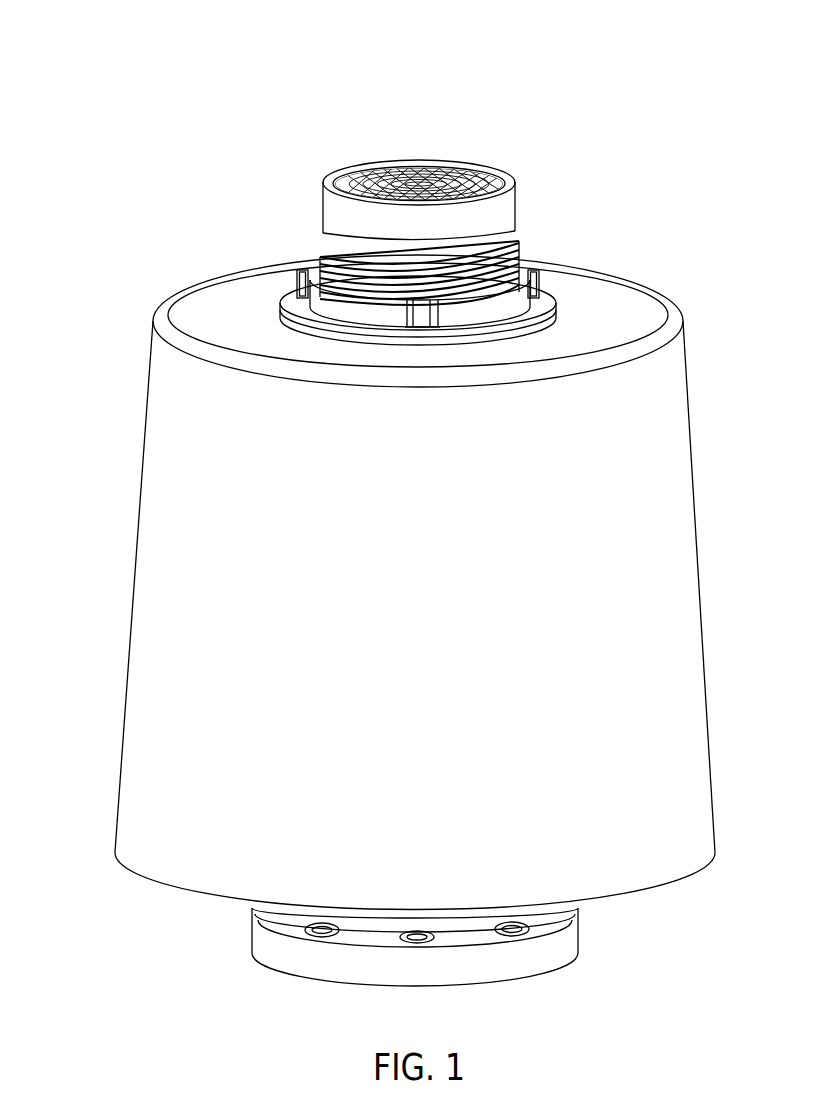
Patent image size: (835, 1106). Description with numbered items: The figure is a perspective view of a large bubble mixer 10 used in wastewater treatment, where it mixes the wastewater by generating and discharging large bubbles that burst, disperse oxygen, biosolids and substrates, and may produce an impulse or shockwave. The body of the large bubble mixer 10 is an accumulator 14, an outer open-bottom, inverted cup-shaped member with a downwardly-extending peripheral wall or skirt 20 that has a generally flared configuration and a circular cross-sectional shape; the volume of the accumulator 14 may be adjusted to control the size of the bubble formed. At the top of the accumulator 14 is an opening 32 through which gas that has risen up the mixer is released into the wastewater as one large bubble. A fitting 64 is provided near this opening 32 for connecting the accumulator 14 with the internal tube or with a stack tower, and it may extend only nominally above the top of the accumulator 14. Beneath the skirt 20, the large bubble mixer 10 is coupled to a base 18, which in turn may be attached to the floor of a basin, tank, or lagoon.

The large bubble mixer 10 is at (94, 78).
The accumulator 14 is at (710, 592).
The base 18 is at (571, 939).
The skirt 20 is at (702, 780).
The opening 32 is at (442, 164).
The fitting 64 is at (332, 207).